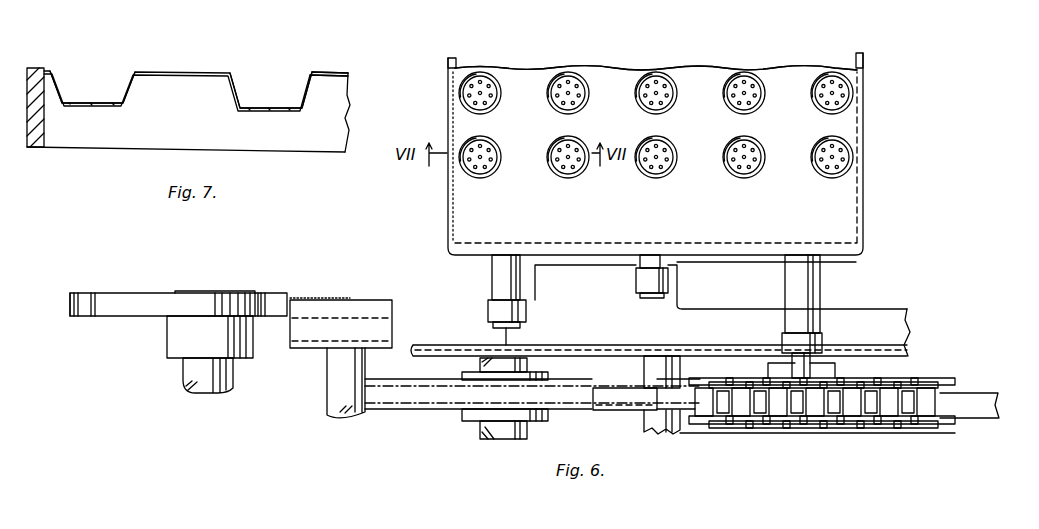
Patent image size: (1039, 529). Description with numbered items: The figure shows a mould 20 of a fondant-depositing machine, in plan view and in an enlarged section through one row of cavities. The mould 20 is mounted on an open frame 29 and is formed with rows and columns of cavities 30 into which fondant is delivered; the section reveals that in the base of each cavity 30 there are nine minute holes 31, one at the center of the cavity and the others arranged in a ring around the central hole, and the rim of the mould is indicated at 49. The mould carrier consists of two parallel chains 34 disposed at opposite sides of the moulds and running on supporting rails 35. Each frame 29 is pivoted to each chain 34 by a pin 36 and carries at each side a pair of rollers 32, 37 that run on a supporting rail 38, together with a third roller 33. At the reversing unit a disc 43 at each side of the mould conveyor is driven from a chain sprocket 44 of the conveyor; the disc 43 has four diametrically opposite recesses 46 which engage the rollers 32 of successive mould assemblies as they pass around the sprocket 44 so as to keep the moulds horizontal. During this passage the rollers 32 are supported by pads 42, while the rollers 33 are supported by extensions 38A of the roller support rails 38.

In FIG. 7, the mould 20 is at (188, 58).
In FIG. 6, the mould 20 is at (875, 208).
In FIG. 7, the open frame 29 is at (33, 149).
In FIG. 6, the open frame 29 is at (455, 58).
In FIG. 7, the cavity 30 is at (130, 80).
In FIG. 6, the cavity 30 is at (552, 74).
In FIG. 7, the minute hole 31 is at (114, 106).
In FIG. 6, the minute hole 31 is at (560, 100).
In FIG. 6, the roller 32 is at (488, 310).
In FIG. 6, the third roller 33 is at (670, 279).
In FIG. 6, the chain 34 is at (930, 380).
In FIG. 6, the supporting rail 35 is at (978, 394).
In FIG. 6, the pin 36 is at (810, 371).
In FIG. 6, the roller 37 is at (783, 342).
In FIG. 6, the supporting rail 38 is at (896, 309).
In FIG. 6, the extension 38A is at (678, 297).
In FIG. 6, the pad 42 is at (358, 302).
In FIG. 6, the disc 43 is at (205, 300).
In FIG. 6, the chain sprocket 44 is at (428, 388).
In FIG. 6, the recess 46 is at (94, 297).
In FIG. 7, the pan rim 49 is at (330, 72).
In FIG. 6, the pan rim 49 is at (683, 201).